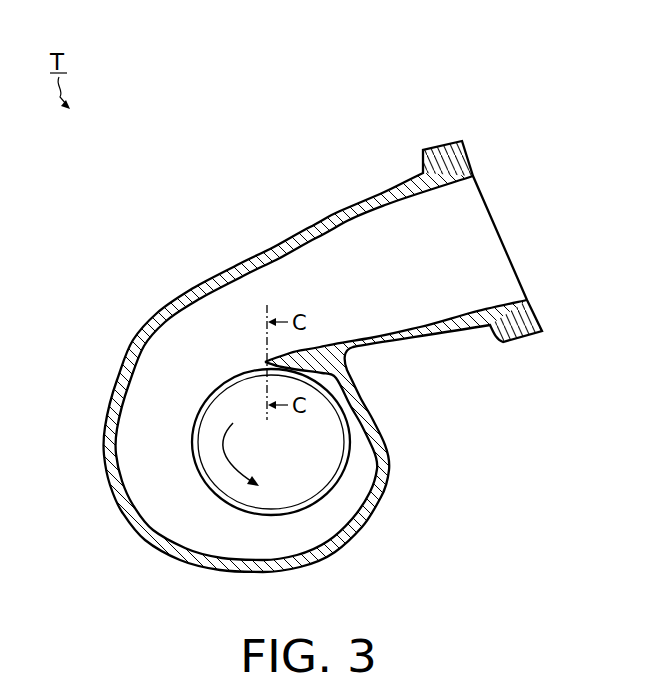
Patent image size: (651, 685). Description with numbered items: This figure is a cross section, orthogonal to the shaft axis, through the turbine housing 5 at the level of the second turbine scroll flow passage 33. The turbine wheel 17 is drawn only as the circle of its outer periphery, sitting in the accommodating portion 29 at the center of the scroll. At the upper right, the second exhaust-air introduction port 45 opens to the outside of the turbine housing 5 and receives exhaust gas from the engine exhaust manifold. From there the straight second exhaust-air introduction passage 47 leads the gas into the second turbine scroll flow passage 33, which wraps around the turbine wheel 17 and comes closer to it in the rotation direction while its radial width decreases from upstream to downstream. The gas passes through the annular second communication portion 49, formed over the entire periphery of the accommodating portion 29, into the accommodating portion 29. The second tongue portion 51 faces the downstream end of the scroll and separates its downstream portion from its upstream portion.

The turbine housing 5 is at (363, 200).
The second exhaust-air introduction port 45 is at (490, 210).
The second exhaust-air introduction passage 47 is at (328, 258).
The second turbine scroll flow passage 33 is at (150, 447).
The second tongue portion 51 is at (270, 368).
The turbine wheel 17 is at (346, 457).
The second communication portion 49 is at (353, 514).
The accommodating portion 29 is at (282, 453).